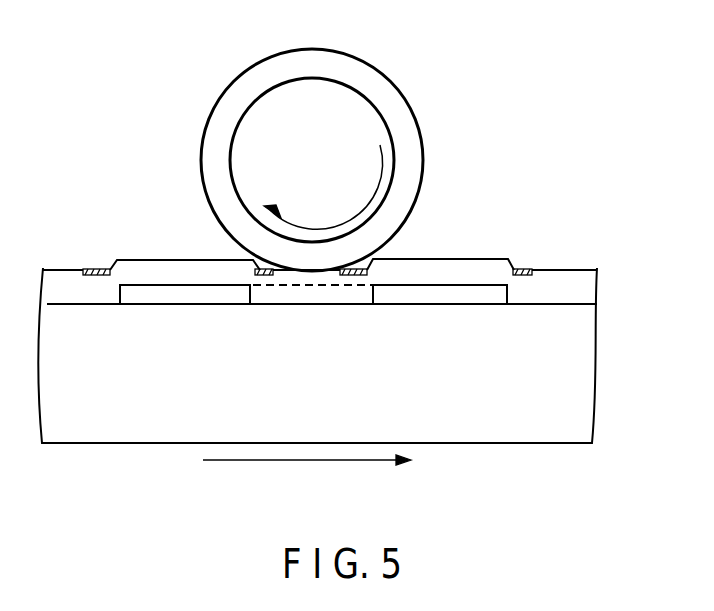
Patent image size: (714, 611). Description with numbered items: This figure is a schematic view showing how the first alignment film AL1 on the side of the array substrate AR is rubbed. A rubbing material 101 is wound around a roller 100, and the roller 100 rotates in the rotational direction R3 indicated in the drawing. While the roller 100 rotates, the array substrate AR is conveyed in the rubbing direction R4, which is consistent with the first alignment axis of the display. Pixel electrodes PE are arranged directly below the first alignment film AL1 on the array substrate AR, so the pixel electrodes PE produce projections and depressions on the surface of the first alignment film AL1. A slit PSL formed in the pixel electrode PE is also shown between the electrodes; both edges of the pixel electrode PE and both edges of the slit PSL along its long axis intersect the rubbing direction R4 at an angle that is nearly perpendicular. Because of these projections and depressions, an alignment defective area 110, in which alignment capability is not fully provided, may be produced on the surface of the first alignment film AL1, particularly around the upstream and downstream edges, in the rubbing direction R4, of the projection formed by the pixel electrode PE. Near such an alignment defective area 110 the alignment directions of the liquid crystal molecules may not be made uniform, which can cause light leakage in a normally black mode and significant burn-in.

The roller 100 is at (367, 99).
The rubbing material 101 is at (423, 148).
The alignment defective area 110 is at (108, 268).
The rotational direction R3 is at (323, 224).
The rubbing direction R4 is at (305, 462).
The first alignment film AL1 is at (573, 268).
The pixel electrode PE is at (181, 306).
The slit PSL is at (305, 302).
The array substrate AR is at (530, 452).